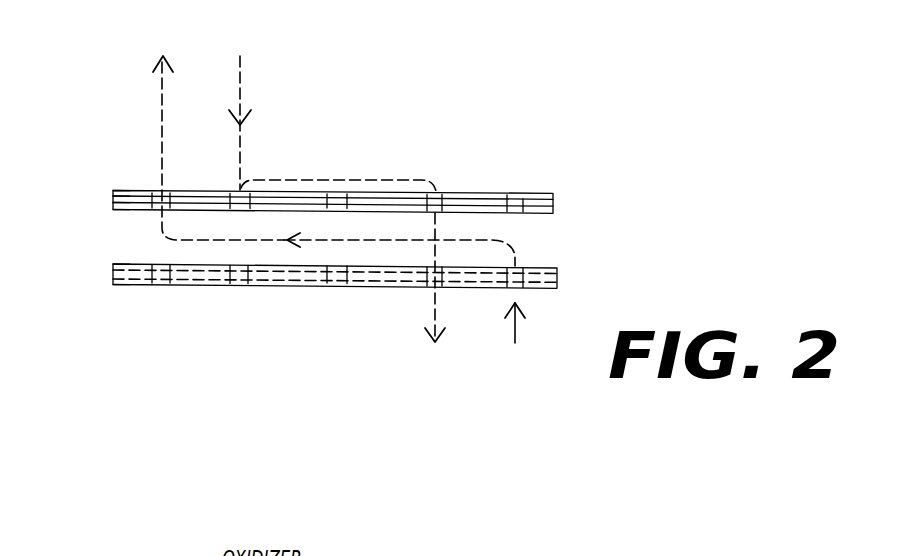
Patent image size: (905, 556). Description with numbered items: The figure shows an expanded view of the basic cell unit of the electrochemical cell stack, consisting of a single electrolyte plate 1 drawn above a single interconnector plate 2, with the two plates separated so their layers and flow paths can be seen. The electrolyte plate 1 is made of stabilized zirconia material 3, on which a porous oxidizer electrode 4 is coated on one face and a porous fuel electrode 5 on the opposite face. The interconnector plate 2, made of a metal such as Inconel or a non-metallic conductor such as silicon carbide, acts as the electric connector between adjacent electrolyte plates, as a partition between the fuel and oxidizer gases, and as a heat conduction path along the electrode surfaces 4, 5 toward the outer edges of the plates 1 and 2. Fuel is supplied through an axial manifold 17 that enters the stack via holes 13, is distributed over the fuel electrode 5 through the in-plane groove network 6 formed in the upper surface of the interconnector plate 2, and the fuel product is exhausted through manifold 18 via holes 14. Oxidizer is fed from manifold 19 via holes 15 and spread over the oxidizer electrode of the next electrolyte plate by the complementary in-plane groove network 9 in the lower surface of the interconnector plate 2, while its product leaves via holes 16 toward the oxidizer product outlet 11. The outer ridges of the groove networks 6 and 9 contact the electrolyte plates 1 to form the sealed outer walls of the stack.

The electrolyte plate 1 is at (557, 206).
The interconnector plate 2 is at (560, 280).
The stabilized zirconia material 3 is at (113, 198).
The porous oxidizer electrode 4 is at (131, 190).
The porous fuel electrode 5 is at (118, 208).
The in-plane groove network 6 is at (119, 264).
The complementary in-plane groove network 9 is at (119, 285).
The oxidizer product outlet 11 is at (422, 321).
The holes 13 is at (525, 193).
The holes 14 is at (168, 191).
The holes 15 is at (244, 187).
The holes 16 is at (437, 192).
The fuel supply manifold 17 is at (423, 335).
The fuel product manifold 18 is at (190, 126).
The oxidizer supply manifold 19 is at (325, 98).